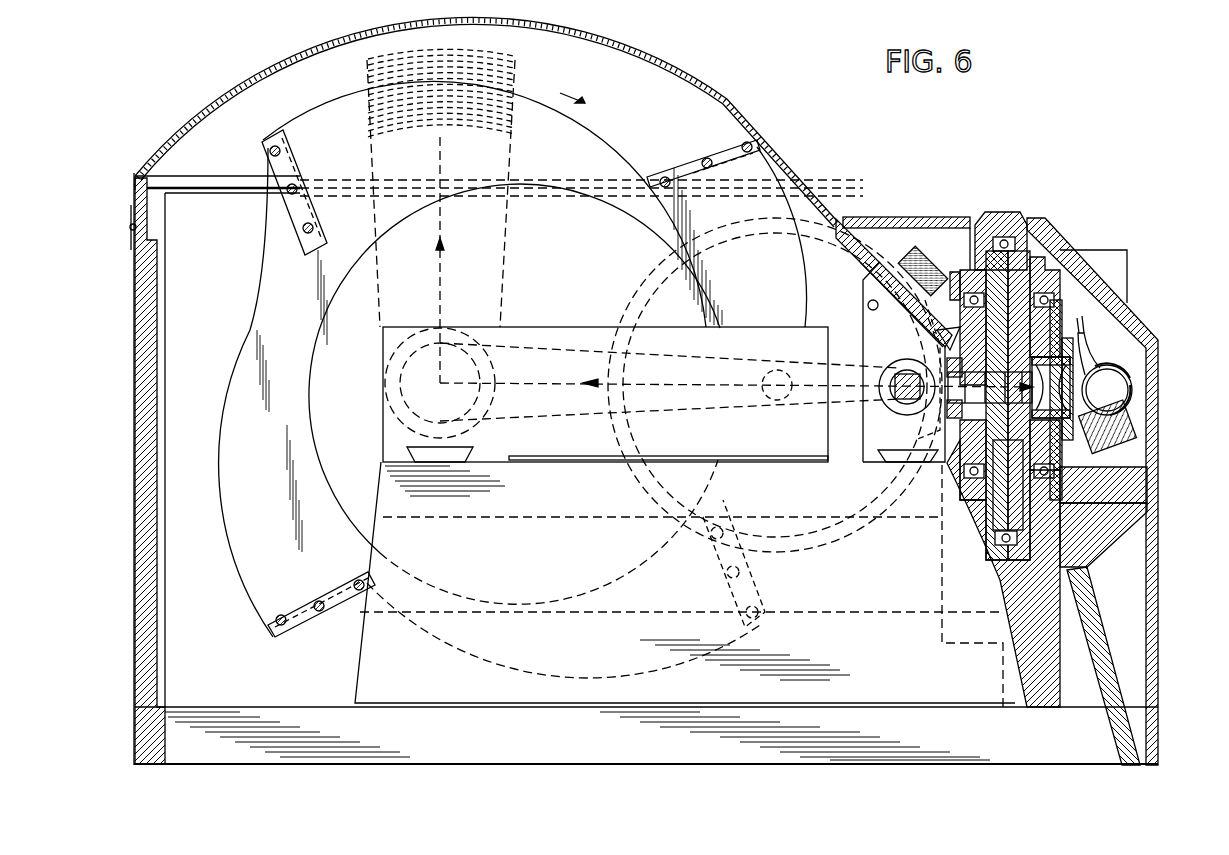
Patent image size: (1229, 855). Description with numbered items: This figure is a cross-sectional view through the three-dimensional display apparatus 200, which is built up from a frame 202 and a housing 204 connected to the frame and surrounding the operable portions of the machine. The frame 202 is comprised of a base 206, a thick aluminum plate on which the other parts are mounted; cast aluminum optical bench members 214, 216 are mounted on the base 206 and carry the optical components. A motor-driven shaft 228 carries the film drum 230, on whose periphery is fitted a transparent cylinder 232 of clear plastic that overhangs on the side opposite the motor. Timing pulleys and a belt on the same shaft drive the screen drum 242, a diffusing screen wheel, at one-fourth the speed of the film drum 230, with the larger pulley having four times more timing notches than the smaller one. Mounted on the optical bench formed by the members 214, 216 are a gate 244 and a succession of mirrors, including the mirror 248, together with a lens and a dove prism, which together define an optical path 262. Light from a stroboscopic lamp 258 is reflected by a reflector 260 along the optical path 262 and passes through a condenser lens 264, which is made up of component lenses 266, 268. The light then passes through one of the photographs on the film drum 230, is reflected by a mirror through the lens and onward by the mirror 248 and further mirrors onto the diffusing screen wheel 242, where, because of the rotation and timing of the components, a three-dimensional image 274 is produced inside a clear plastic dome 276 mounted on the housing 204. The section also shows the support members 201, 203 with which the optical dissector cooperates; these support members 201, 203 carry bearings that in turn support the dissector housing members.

The apparatus 200 is at (891, 193).
The support member 201 is at (950, 270).
The frame 202 is at (245, 757).
The support member 203 is at (1063, 292).
The housing 204 is at (137, 362).
The base 206 is at (421, 757).
The optical bench member 214 is at (433, 678).
The optical bench member 216 is at (576, 446).
The shaft 228 is at (781, 370).
The film drum 230 is at (830, 540).
The transparent cylinder 232 is at (773, 537).
The screen drum 242 is at (268, 305).
The gate 244 is at (925, 405).
The mirror 248 is at (906, 370).
The stroboscopic lamp 258 is at (1130, 355).
The reflector 260 is at (1130, 390).
The optical path 262 is at (445, 292).
The condenser lens 264 is at (1066, 345).
The component lens 266 is at (1098, 362).
The component lens 268 is at (1016, 485).
The three-dimensional image 274 is at (500, 62).
The clear plastic dome 276 is at (258, 98).